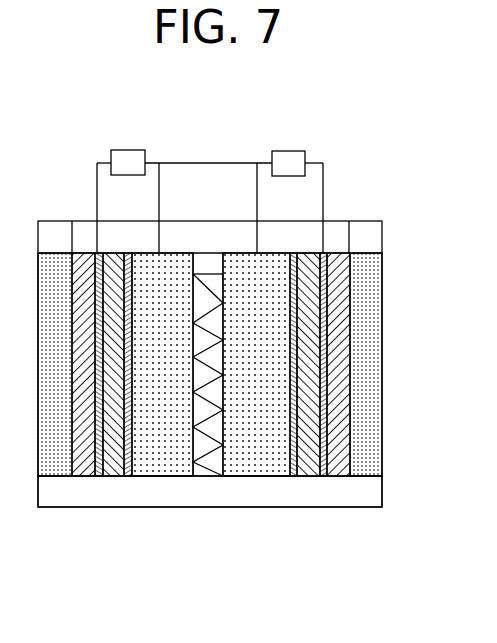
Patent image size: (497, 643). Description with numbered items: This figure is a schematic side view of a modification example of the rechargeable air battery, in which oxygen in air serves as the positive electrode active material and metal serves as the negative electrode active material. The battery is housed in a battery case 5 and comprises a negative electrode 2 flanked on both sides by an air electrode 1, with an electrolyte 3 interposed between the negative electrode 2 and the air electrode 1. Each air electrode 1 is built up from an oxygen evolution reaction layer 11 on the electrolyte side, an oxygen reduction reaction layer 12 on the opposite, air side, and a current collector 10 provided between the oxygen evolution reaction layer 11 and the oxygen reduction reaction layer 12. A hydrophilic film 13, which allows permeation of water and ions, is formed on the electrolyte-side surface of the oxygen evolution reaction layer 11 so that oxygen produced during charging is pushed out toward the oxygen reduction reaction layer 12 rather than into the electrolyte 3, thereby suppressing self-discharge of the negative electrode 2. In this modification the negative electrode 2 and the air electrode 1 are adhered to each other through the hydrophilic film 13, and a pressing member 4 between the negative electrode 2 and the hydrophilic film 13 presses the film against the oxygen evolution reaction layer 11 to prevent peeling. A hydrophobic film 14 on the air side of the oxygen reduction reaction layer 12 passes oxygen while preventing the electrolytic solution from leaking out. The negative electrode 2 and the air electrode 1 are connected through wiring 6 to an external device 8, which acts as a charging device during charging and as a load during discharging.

The air electrode 1 is at (93, 492).
The negative electrode 2 is at (148, 253).
The electrolyte 3 is at (201, 272).
The pressing member 4 is at (213, 272).
The battery case 5 is at (345, 221).
The wiring 6 is at (307, 163).
The external device 8 is at (272, 152).
The current collector 10 is at (324, 476).
The oxygen evolution reaction layer 11 is at (309, 476).
The oxygen reduction reaction layer 12 is at (337, 476).
The hydrophilic film 13 is at (293, 476).
The hydrophobic film 14 is at (362, 476).